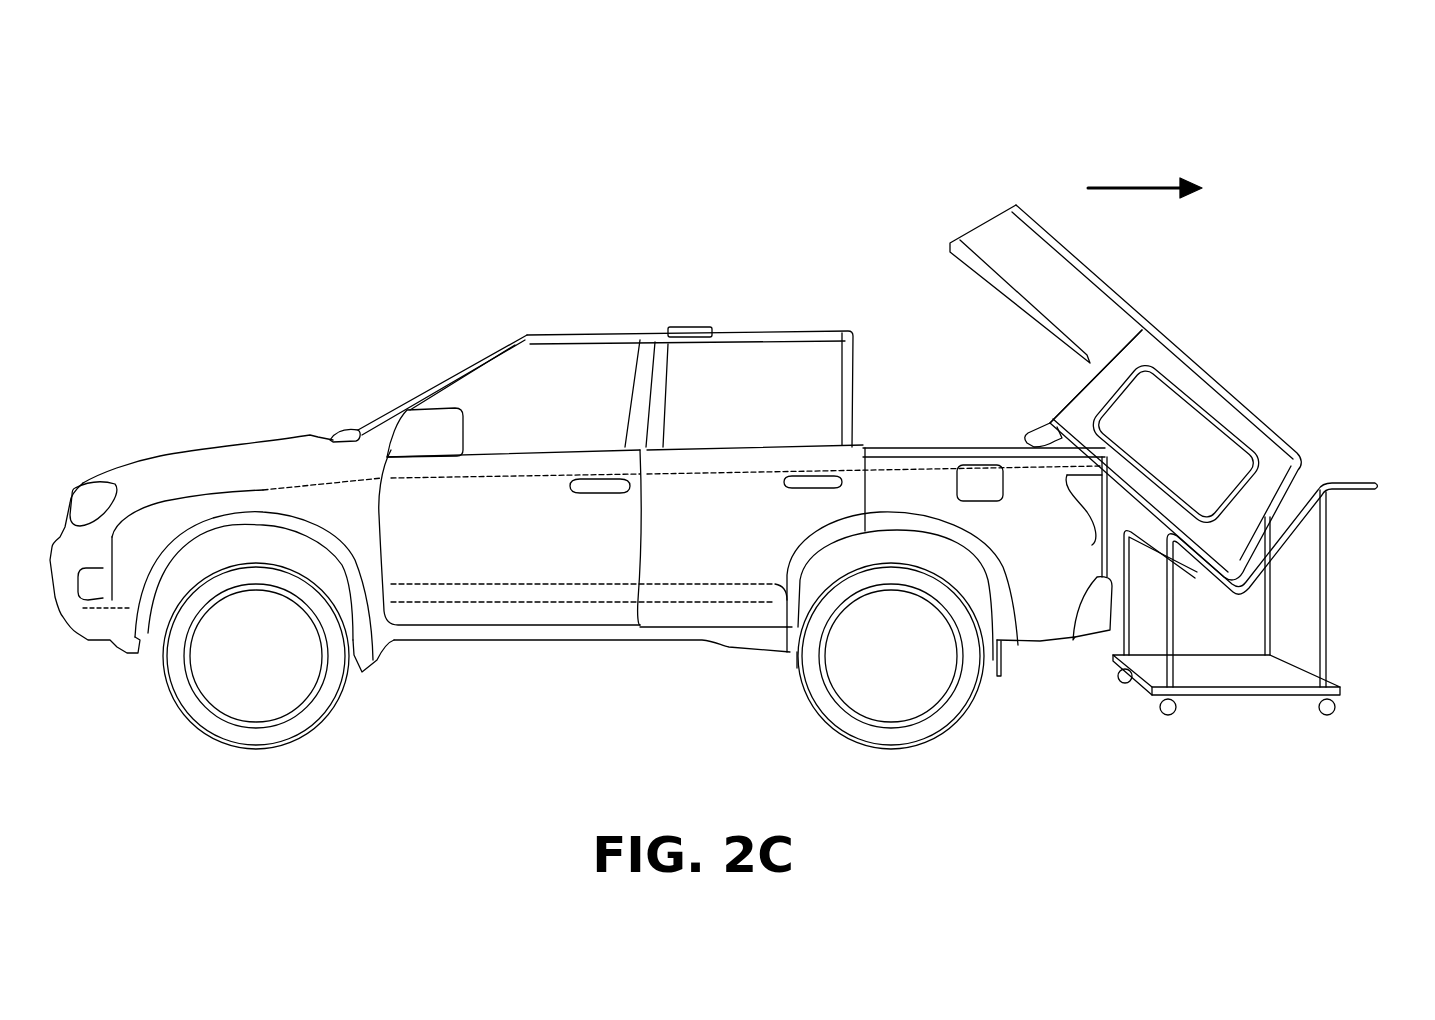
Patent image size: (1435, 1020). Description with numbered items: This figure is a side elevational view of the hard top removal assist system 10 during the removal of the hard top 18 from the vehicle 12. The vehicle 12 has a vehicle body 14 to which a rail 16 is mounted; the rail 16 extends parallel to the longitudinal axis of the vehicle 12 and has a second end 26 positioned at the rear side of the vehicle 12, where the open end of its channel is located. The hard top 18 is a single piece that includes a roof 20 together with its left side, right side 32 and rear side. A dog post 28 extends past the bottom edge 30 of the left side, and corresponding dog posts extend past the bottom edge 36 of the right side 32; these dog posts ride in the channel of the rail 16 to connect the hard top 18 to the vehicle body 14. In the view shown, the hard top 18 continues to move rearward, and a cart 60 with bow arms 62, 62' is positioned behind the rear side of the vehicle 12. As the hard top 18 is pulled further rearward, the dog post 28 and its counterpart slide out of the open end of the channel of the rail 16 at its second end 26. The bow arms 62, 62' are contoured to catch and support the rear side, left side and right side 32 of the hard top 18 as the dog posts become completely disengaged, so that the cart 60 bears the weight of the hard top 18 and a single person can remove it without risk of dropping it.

The hard top removal assist system 10 is at (932, 178).
The vehicle 12 is at (333, 363).
The vehicle body 14 is at (707, 549).
The rail 16 is at (934, 447).
The hard top 18 is at (1212, 283).
The roof 20 is at (1040, 272).
The second end 26 is at (1112, 373).
The dog post 28 is at (1033, 428).
The bottom edge 30 is at (1095, 490).
The right side 32 is at (1063, 387).
The bottom edge 36 is at (1073, 640).
The cart 60 is at (1373, 459).
The bow arm 62 is at (1273, 586).
The bow arm 62' is at (1272, 585).